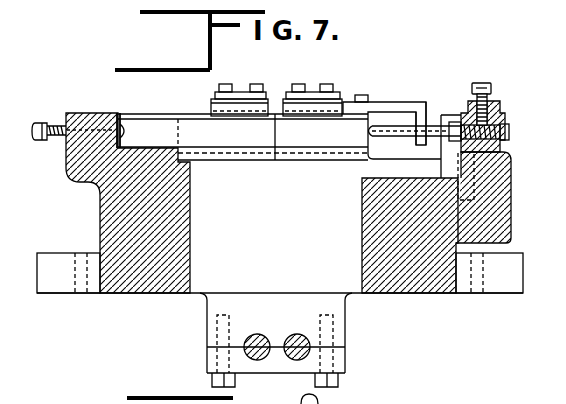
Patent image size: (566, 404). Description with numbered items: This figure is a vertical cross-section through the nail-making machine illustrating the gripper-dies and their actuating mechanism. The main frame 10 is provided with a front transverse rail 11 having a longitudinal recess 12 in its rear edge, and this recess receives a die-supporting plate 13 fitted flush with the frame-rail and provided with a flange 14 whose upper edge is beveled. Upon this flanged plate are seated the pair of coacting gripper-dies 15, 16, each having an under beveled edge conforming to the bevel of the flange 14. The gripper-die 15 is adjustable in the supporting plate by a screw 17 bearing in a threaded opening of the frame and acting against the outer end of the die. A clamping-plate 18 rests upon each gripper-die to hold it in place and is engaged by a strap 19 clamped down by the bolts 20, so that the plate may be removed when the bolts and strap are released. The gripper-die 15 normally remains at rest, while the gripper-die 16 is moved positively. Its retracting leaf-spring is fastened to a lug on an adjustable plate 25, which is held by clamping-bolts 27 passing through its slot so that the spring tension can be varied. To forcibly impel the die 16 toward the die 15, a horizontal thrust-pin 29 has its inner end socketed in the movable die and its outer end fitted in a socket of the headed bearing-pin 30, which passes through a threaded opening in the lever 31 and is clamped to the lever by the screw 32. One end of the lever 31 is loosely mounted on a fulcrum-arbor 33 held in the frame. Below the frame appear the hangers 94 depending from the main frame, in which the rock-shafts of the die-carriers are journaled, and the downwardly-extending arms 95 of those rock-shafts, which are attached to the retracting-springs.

The main frame 10 is at (128, 293).
The front transverse rail 11 is at (85, 113).
The longitudinal recess 12 is at (115, 112).
The die-supporting plate 13 is at (216, 161).
The flange 14 is at (305, 148).
The gripper-die 15 is at (159, 130).
The gripper-die 16 is at (338, 133).
The screw 17 is at (50, 138).
The clamping-plate 18 is at (217, 108).
The strap 19 is at (288, 97).
The bolts 20 is at (256, 83).
The adjustable plate 25 is at (404, 107).
The clamping-bolts 27 is at (369, 97).
The thrust-pin 29 is at (399, 135).
The headed bearing-pin 30 is at (509, 133).
The lever 31 is at (503, 124).
The screw 32 is at (486, 86).
The fulcrum-arbor 33 is at (512, 178).
The hangers 94 is at (331, 306).
The downwardly-extending arms 95 is at (246, 343).